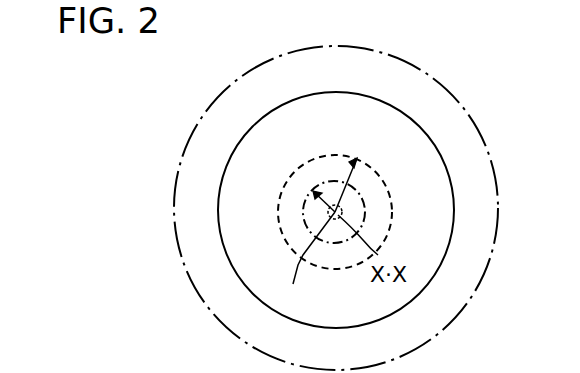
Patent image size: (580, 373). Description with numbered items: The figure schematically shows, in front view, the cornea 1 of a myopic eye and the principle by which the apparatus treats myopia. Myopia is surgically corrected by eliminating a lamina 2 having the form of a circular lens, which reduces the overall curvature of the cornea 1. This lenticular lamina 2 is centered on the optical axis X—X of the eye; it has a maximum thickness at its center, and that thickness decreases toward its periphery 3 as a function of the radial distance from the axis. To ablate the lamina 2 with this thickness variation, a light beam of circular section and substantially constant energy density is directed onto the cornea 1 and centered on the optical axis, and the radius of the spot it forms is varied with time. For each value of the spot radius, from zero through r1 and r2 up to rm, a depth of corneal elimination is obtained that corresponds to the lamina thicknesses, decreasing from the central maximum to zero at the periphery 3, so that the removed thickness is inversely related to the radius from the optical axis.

The cornea 1 is at (407, 131).
The lamina 2 is at (377, 200).
The periphery 3 is at (390, 227).
The maximum spot radius rm is at (358, 176).
The first spot radius r1 is at (306, 257).
The second spot radius r2 is at (318, 198).